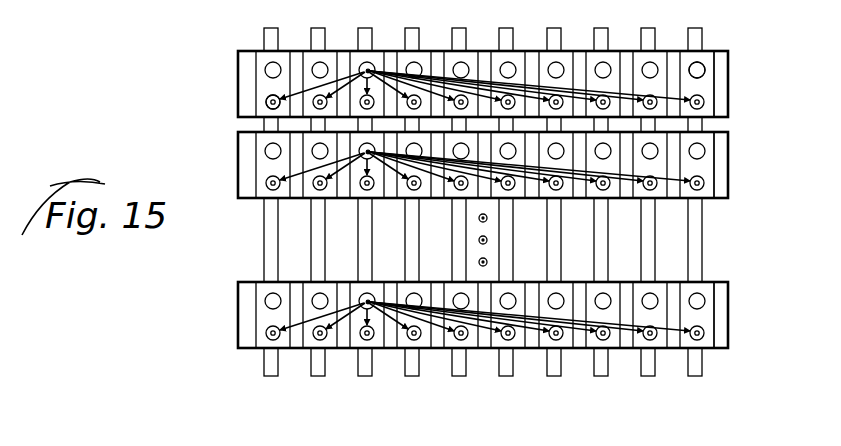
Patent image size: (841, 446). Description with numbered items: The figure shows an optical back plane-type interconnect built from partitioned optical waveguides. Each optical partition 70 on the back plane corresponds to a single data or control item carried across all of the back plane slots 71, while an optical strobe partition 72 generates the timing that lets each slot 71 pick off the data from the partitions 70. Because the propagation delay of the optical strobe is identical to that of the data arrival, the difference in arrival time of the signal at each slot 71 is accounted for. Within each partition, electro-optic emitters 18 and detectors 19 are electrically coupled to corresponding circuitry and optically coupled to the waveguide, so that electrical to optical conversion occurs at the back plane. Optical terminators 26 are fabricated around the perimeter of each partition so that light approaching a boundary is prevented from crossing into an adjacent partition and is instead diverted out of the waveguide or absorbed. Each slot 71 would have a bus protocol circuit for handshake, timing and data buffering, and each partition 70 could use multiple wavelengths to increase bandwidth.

The electro-optic emitter 18 is at (704, 72).
The detector 19 is at (265, 102).
The optical terminator 26 is at (728, 98).
The optical partition 70 is at (238, 148).
The back plane slot 71 is at (270, 377).
The optical strobe partition 72 is at (238, 74).